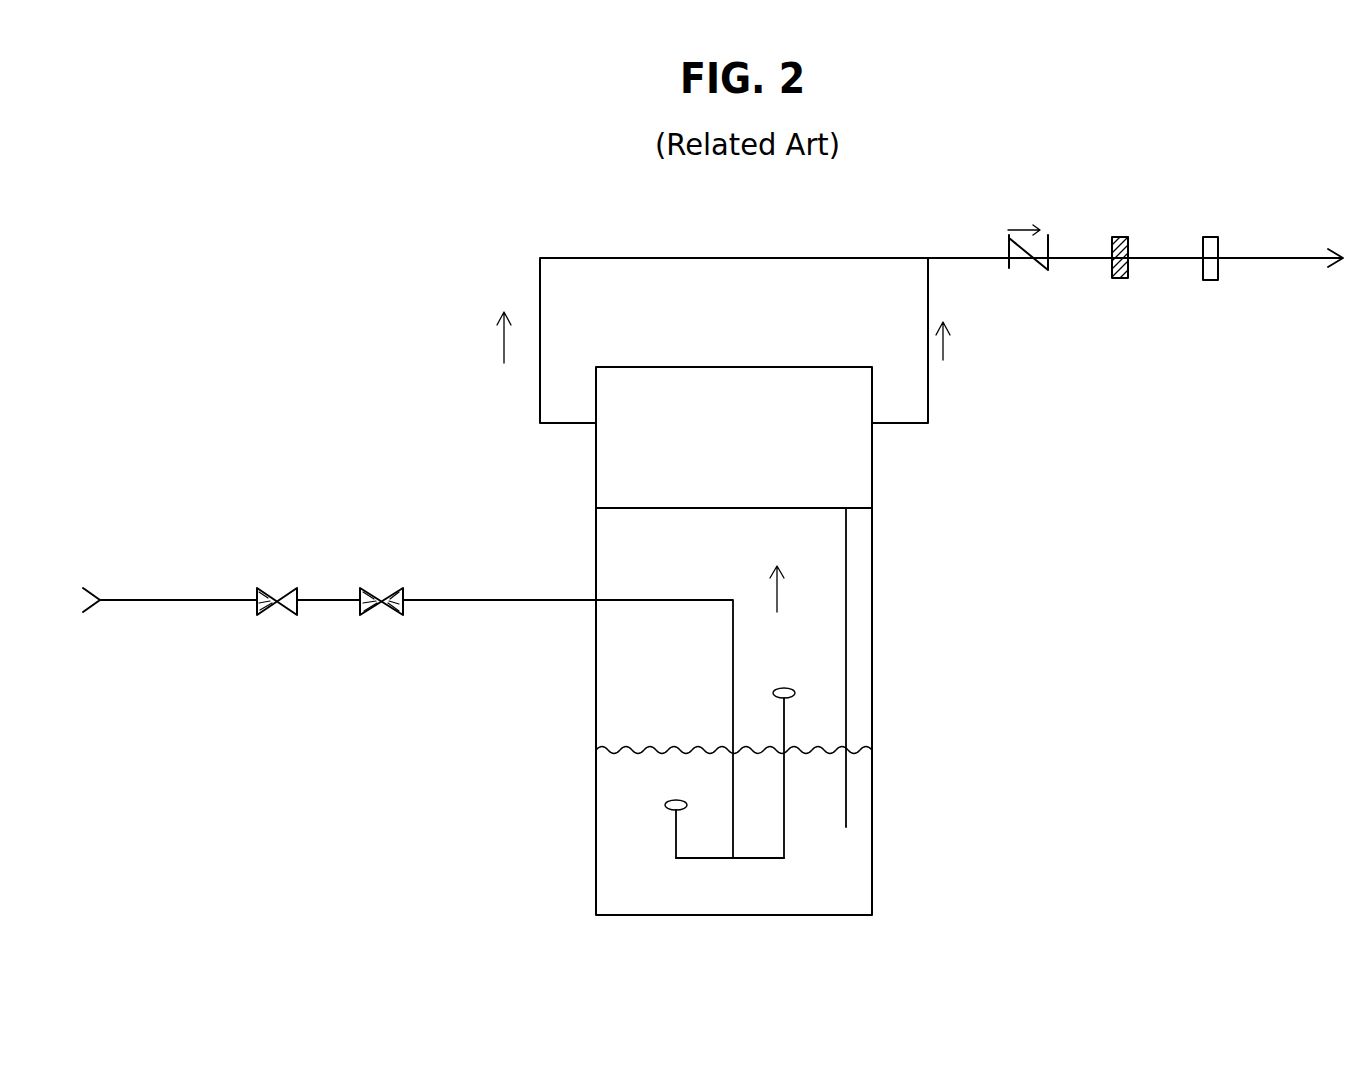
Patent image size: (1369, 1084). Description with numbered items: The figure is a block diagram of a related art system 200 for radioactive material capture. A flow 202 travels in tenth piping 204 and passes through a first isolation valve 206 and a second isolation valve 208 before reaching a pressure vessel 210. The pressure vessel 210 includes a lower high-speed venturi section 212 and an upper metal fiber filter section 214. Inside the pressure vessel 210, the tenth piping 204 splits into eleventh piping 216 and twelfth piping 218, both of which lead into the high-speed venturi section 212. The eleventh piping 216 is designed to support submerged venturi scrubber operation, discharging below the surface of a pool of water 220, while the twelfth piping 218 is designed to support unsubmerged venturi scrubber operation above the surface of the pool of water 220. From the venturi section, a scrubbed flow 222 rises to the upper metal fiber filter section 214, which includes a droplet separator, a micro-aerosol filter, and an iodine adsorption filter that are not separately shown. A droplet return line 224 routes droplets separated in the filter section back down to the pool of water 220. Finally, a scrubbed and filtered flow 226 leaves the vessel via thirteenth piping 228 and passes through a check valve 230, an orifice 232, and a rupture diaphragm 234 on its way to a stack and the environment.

The related art system 200 is at (401, 734).
The flow 202 is at (129, 571).
The tenth piping 204 is at (172, 604).
The first isolation valve 206 is at (306, 565).
The second isolation valve 208 is at (411, 565).
The pressure vessel 210 is at (486, 614).
The high-speed venturi section 212 is at (874, 857).
The upper metal fiber filter section 214 is at (877, 471).
The eleventh piping 216 is at (670, 842).
The twelfth piping 218 is at (768, 863).
The pool of water 220 is at (692, 896).
The scrubbed flow 222 is at (801, 589).
The droplet return line 224 is at (853, 586).
The scrubbed and filtered flow 226 is at (725, 337).
The thirteenth piping 228 is at (545, 303).
The check valve 230 is at (1047, 216).
The orifice 232 is at (1131, 223).
The rupture diaphragm 234 is at (1224, 226).